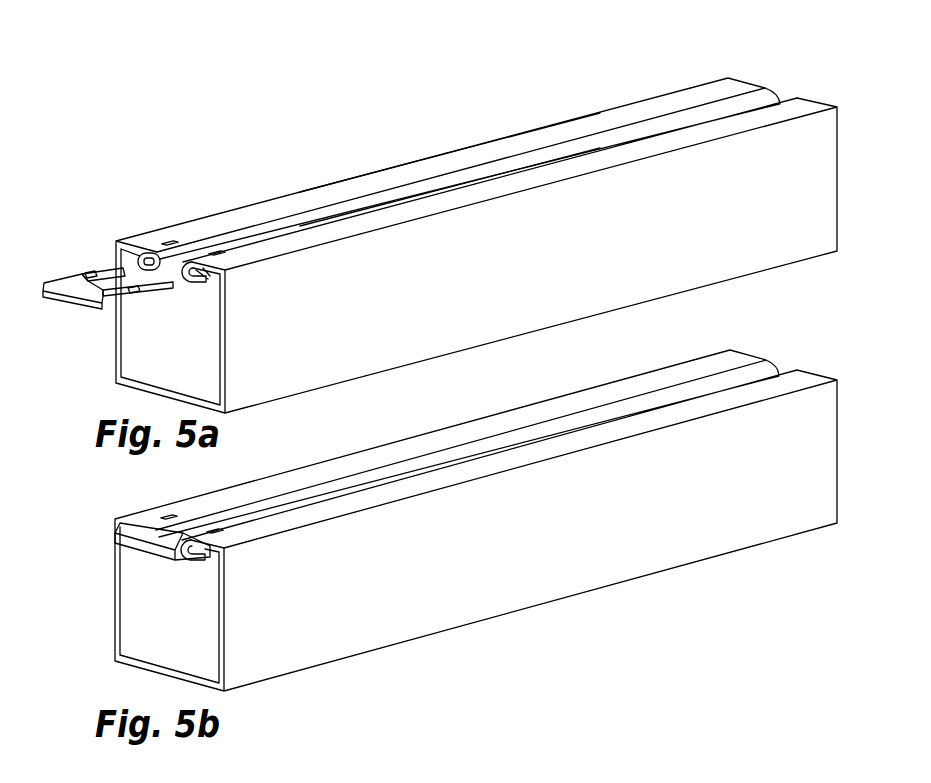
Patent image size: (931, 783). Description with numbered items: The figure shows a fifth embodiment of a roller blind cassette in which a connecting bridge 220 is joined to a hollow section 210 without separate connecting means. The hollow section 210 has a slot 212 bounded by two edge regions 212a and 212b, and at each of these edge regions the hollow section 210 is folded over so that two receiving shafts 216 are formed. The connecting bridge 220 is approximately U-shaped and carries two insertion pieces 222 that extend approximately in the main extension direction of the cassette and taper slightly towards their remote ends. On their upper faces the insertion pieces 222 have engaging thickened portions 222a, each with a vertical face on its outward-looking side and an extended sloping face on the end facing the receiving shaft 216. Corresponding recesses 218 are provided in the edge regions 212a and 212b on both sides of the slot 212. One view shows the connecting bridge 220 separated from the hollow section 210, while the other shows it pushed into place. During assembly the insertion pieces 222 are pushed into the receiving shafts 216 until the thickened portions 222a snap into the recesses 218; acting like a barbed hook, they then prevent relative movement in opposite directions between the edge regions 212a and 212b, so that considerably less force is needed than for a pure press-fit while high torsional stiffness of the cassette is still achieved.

In FIG. 5A, the hollow section 210 is at (679, 96).
In FIG. 5B, the hollow section 210 is at (658, 382).
In FIG. 5A, the slot 212 is at (437, 190).
In FIG. 5A, the edge region 212a is at (468, 163).
In FIG. 5A, the edge region 212b is at (538, 168).
In FIG. 5A, the receiving shaft 216 is at (152, 250).
In FIG. 5A, the recess 218 is at (170, 239).
In FIG. 5B, the recess 218 is at (165, 515).
In FIG. 5A, the connecting bridge 220 is at (72, 287).
In FIG. 5B, the connecting bridge 220 is at (140, 533).
In FIG. 5A, the insertion piece 222 is at (106, 268).
In FIG. 5A, the engaging thickened portion 222a is at (97, 268).